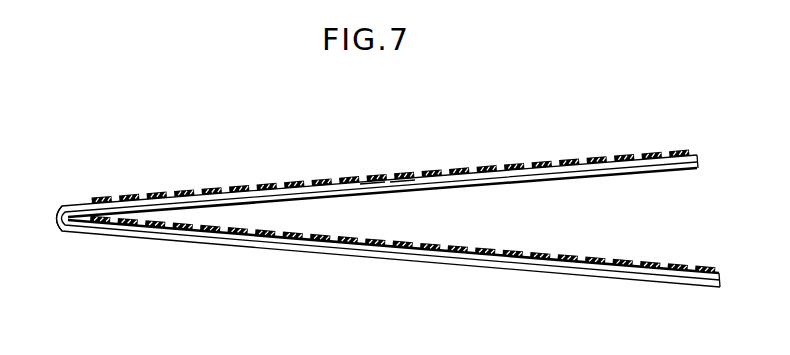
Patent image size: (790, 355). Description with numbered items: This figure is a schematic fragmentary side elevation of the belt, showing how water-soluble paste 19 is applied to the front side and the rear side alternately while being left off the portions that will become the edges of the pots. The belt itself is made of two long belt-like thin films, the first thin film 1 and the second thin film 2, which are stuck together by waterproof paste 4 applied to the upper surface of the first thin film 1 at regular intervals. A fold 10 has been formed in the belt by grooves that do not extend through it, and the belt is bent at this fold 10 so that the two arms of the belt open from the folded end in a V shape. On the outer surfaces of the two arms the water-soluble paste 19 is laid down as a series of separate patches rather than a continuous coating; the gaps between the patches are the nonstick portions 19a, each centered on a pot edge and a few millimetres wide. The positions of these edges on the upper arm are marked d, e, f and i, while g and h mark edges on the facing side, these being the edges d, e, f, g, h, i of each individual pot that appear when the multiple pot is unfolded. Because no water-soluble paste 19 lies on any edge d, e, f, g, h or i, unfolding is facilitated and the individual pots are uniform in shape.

The first thin film 1 is at (700, 162).
The second thin film 2 is at (412, 170).
The waterproof paste 4 is at (595, 283).
The fold 10 is at (58, 225).
The water-soluble paste 19 is at (402, 236).
The nonstick portion 19a is at (531, 248).
The edge f is at (333, 178).
The edge e is at (360, 177).
The edge d is at (386, 175).
The edge i is at (417, 173).
The edge g is at (368, 197).
The edge h is at (398, 197).